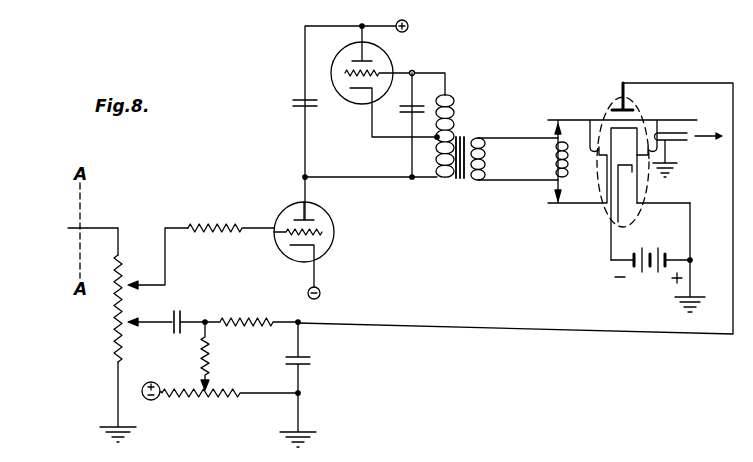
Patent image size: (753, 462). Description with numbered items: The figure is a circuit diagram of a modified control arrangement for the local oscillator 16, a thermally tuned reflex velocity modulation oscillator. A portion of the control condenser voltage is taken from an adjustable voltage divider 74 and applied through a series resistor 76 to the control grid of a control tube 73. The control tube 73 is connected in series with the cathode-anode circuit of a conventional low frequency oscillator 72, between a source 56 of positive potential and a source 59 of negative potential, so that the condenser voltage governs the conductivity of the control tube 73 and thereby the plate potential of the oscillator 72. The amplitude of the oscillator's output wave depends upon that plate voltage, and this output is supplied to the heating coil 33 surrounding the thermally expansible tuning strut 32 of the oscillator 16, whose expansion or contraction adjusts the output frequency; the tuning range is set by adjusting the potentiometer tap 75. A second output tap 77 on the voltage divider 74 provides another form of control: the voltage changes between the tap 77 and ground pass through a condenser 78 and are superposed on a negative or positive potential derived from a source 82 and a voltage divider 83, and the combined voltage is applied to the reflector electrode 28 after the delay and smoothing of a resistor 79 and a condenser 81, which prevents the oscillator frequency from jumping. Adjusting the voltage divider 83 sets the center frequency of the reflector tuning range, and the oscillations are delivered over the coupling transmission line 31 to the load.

The local oscillator 16 is at (727, 71).
The reflector electrode 28 is at (628, 108).
The coupling transmission line 31 is at (680, 142).
The tuning strut 32 is at (568, 122).
The heating coil 33 is at (552, 152).
The source of positive potential 56 is at (408, 27).
The source of negative potential 59 is at (321, 293).
The low frequency oscillator 72 is at (488, 90).
The control tube 73 is at (334, 232).
The voltage divider 74 is at (110, 332).
The potentiometer tap 75 is at (140, 290).
The series resistor 76 is at (228, 205).
The second output tap 77 is at (135, 326).
The condenser 78 is at (185, 310).
The resistor 79 is at (256, 330).
The condenser 81 is at (312, 364).
The source 82 is at (153, 401).
The voltage divider 83 is at (222, 404).